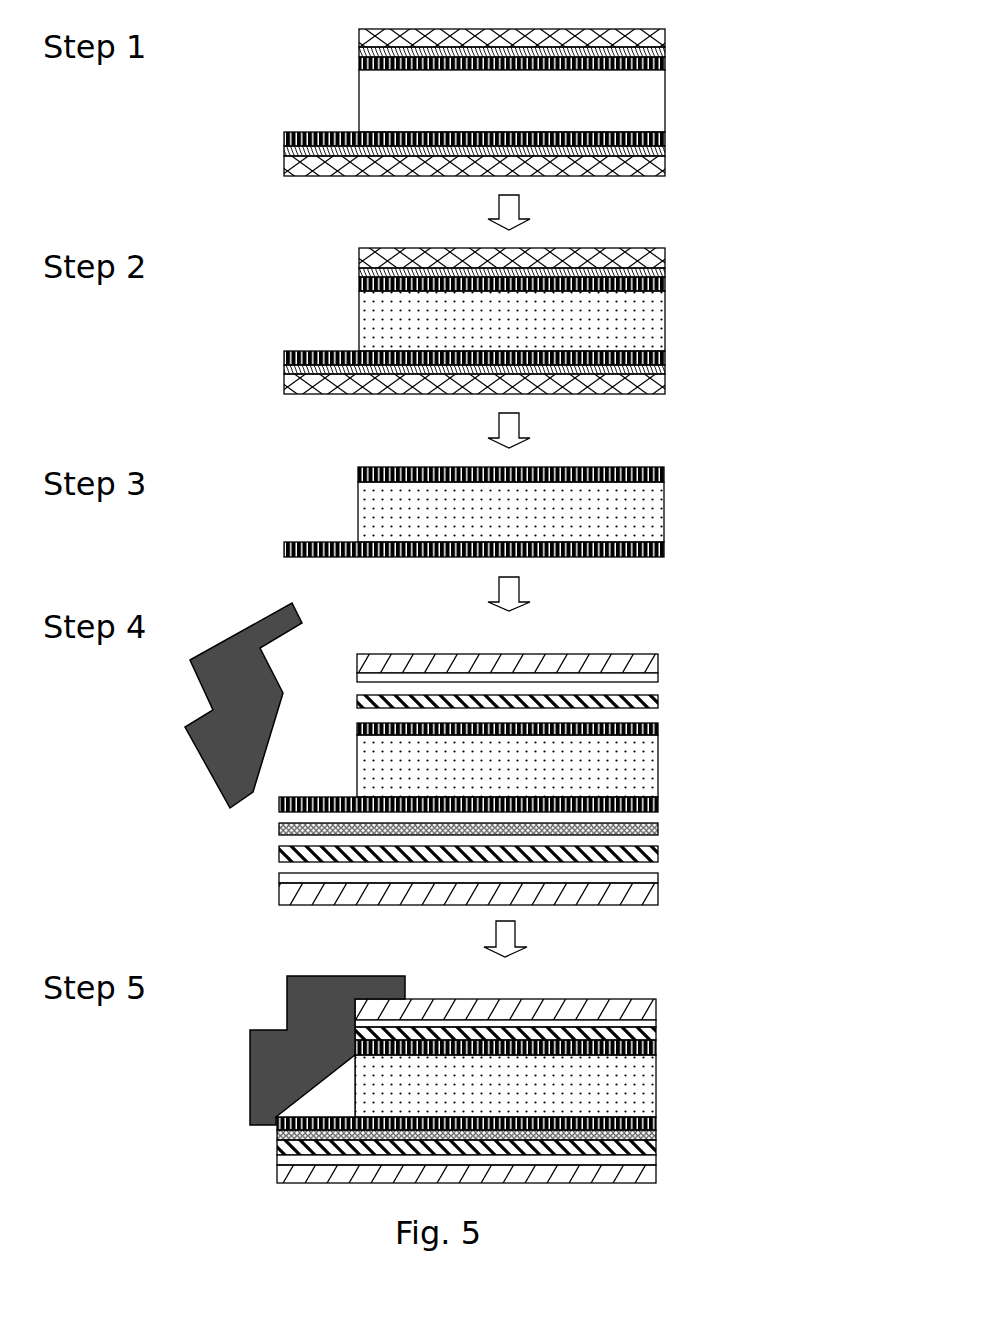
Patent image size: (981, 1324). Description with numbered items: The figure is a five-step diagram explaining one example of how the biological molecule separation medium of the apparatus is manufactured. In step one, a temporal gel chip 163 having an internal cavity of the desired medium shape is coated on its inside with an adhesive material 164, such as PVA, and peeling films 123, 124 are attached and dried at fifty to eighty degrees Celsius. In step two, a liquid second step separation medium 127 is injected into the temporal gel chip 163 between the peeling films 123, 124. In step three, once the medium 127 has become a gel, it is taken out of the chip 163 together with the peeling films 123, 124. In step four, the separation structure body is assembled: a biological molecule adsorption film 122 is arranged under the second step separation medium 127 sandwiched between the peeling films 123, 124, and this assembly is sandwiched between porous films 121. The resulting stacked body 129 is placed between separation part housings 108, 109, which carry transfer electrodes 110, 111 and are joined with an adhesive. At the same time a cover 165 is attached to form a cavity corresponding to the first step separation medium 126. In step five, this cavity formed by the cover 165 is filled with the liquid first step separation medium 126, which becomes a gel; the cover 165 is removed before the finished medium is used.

The separation part housing 108 is at (655, 893).
The separation part housing 109 is at (654, 666).
The transfer electrode 110 is at (655, 877).
The transfer electrode 111 is at (655, 678).
The porous film 121 is at (655, 702).
The biological molecule adsorption film 122 is at (655, 829).
The peeling film 123 is at (666, 141).
The peeling film 124 is at (666, 64).
The first step separation medium 126 is at (333, 1100).
The second step separation medium 127 is at (660, 103).
The stacked body 129 is at (746, 1000).
The temporal gel chip 163 is at (662, 40).
The adhesive material 164 is at (662, 53).
The cover 165 is at (210, 694).